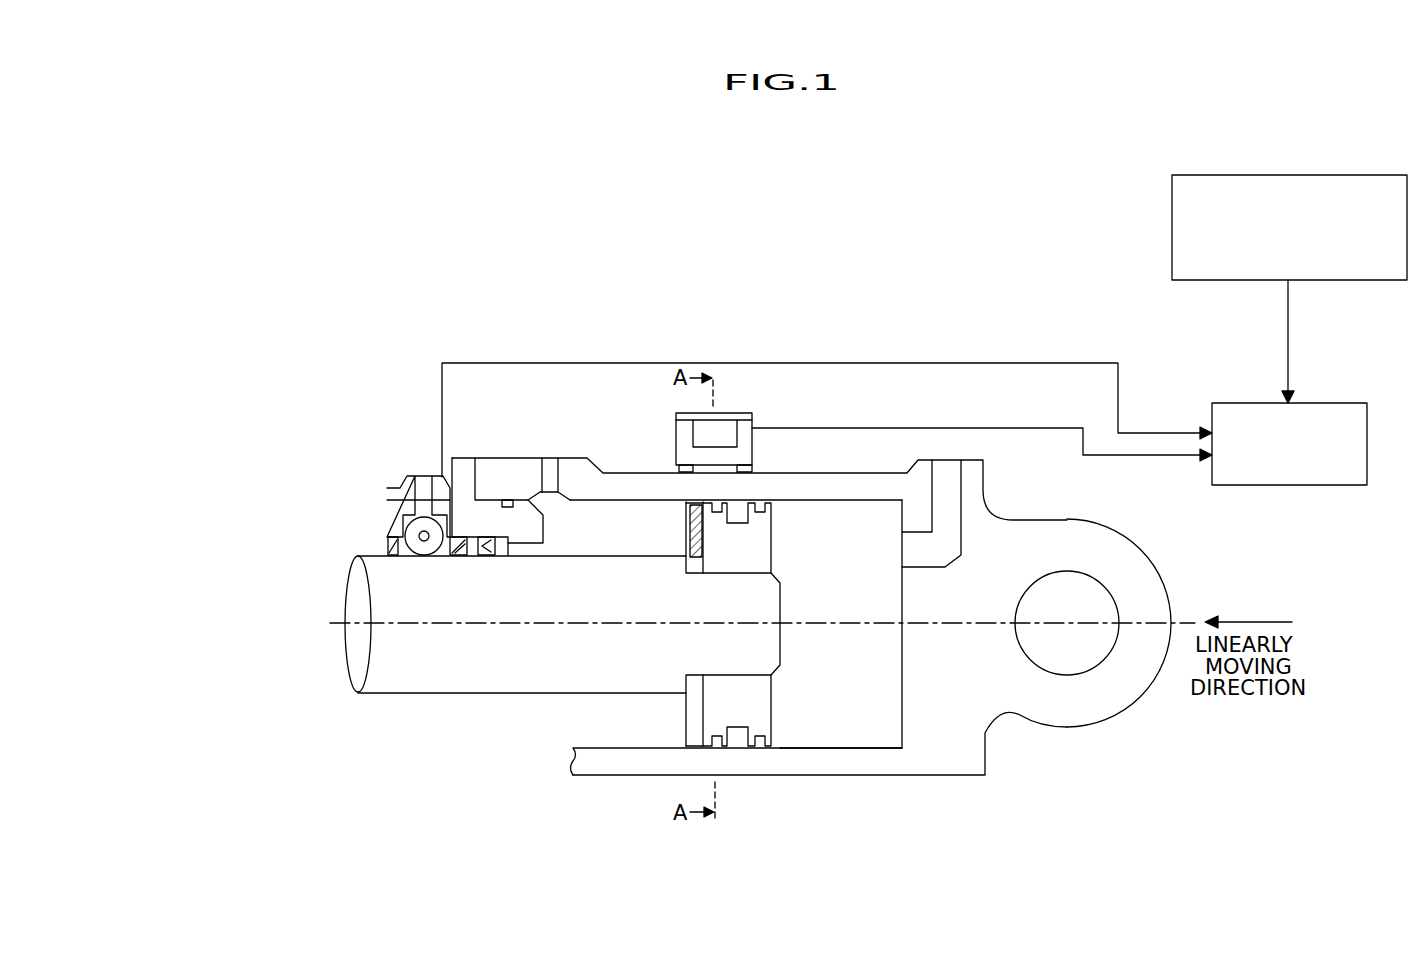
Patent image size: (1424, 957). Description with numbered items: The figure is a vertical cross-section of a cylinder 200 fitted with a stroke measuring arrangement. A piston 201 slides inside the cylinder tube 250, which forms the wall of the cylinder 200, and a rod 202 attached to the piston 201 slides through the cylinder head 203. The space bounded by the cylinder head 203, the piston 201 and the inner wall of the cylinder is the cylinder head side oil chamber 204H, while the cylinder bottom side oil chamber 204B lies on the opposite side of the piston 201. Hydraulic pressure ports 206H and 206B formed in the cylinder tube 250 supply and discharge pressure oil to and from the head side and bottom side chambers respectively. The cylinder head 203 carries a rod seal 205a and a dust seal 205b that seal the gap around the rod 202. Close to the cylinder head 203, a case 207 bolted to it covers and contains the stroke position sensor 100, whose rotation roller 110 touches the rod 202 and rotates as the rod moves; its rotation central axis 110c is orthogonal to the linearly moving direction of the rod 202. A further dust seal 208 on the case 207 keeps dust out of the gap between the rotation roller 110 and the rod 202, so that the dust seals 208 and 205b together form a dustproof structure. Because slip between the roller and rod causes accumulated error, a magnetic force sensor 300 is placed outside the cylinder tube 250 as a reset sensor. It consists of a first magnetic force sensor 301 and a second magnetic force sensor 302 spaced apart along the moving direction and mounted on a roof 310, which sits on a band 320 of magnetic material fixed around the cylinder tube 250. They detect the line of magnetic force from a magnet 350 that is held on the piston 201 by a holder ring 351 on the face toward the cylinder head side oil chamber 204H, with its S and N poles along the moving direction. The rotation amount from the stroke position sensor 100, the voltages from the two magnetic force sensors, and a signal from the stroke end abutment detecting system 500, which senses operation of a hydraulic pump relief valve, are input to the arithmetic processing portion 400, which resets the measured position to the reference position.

The stroke position sensor 100 is at (642, 415).
The rotation roller 110 is at (258, 465).
The rotation central axis 110c is at (251, 513).
The cylinder 200 is at (681, 540).
The piston 201 is at (773, 538).
The rod 202 is at (360, 660).
The cylinder head 203 is at (457, 458).
The cylinder bottom side oil chamber 204B is at (868, 723).
The cylinder head side oil chamber 204H is at (567, 543).
The rod seal 205a is at (482, 537).
The dust seal 205b is at (457, 557).
The hydraulic pressure port 206B is at (945, 460).
The hydraulic pressure port 206H is at (548, 470).
The case 207 is at (387, 498).
The dust seal 208 is at (390, 545).
The cylinder tube 250 is at (600, 767).
The magnetic force sensor 300 is at (937, 307).
The first magnetic force sensor 301 is at (695, 468).
The second magnetic force sensor 302 is at (750, 468).
The roof 310 is at (676, 428).
The band 320 is at (802, 434).
The magnet 350 is at (688, 523).
The holder ring 351 is at (686, 517).
The arithmetic processing portion 400 is at (1322, 387).
The stroke end abutment detecting system 500 is at (1322, 157).